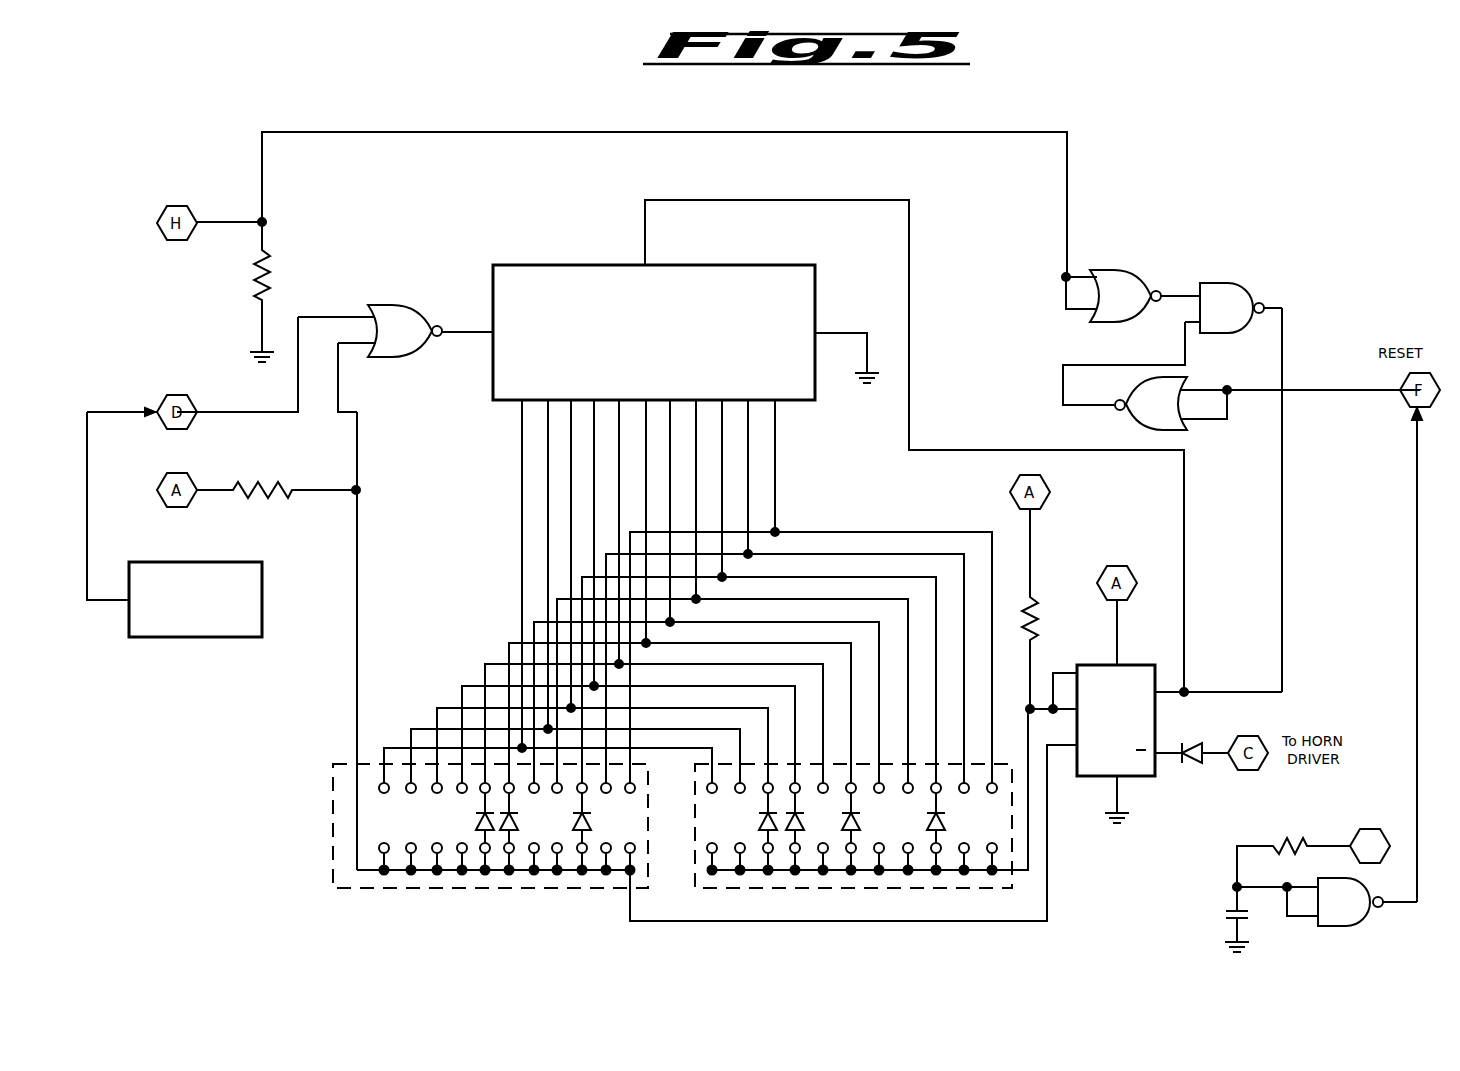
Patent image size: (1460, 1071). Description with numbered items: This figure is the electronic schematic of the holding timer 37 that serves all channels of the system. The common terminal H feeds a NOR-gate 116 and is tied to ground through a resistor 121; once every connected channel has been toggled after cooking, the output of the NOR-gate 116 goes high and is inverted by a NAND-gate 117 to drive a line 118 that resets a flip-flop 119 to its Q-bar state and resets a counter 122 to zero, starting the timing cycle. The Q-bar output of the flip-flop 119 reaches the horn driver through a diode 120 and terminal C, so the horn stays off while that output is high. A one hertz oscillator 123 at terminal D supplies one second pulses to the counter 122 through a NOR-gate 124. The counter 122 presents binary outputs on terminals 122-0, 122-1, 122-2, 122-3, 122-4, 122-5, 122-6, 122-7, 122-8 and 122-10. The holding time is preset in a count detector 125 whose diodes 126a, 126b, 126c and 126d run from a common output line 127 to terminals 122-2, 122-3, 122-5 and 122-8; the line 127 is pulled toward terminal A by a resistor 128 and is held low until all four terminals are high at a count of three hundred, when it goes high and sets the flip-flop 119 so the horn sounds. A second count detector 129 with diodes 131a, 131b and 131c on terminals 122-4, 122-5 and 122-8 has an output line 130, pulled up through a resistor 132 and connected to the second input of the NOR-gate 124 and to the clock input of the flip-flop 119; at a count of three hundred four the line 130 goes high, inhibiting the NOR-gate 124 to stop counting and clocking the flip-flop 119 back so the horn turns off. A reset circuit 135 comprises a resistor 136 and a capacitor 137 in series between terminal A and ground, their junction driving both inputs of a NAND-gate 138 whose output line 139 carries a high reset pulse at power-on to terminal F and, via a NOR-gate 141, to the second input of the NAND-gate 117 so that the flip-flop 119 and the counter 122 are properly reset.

The holding timer 37 is at (252, 740).
The NOR-gate 116 is at (1117, 275).
The NAND-gate 117 is at (1232, 290).
The line 118 is at (1282, 642).
The flip-flop 119 is at (1133, 778).
The diode 120 is at (1192, 766).
The resistor 121 is at (272, 278).
The counter 122 is at (810, 300).
The counter terminal 122-0 is at (512, 436).
The counter terminal 122-1 is at (548, 447).
The counter terminal 122-2 is at (571, 468).
The counter terminal 122-3 is at (594, 490).
The counter terminal 122-4 is at (619, 508).
The counter terminal 122-5 is at (646, 447).
The counter terminal 122-6 is at (670, 467).
The counter terminal 122-7 is at (696, 486).
The counter terminal 122-8 is at (722, 503).
The counter terminal 122-10 is at (775, 527).
The oscillator 123 is at (262, 601).
The NOR-gate 124 is at (393, 314).
The count detector 125 is at (736, 886).
The diode 126a is at (759, 822).
The diode 126b is at (804, 826).
The diode 126c is at (878, 823).
The diode 126d is at (970, 825).
The common output line 127 is at (1015, 876).
The resistor 128 is at (1036, 616).
The count detector 129 is at (327, 808).
The output line 130 is at (356, 686).
The diode 131a is at (476, 822).
The diode 131b is at (518, 822).
The diode 131c is at (616, 825).
The resistor 132 is at (258, 483).
The reset circuit 135 is at (1351, 826).
The resistor 136 is at (1293, 845).
The capacitor 137 is at (1225, 914).
The NAND-gate 138 is at (1335, 918).
The line 139 is at (1417, 572).
The NOR-gate 141 is at (1140, 418).